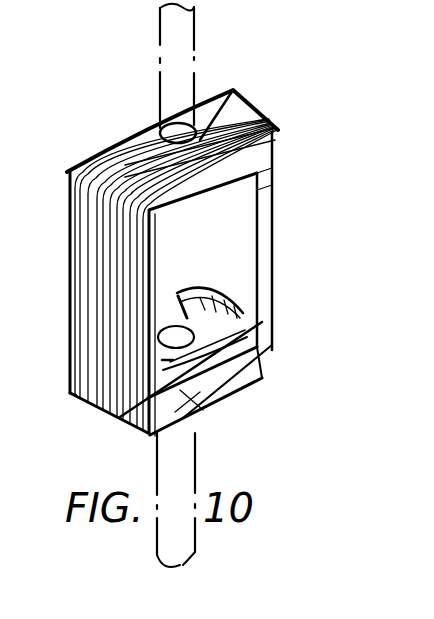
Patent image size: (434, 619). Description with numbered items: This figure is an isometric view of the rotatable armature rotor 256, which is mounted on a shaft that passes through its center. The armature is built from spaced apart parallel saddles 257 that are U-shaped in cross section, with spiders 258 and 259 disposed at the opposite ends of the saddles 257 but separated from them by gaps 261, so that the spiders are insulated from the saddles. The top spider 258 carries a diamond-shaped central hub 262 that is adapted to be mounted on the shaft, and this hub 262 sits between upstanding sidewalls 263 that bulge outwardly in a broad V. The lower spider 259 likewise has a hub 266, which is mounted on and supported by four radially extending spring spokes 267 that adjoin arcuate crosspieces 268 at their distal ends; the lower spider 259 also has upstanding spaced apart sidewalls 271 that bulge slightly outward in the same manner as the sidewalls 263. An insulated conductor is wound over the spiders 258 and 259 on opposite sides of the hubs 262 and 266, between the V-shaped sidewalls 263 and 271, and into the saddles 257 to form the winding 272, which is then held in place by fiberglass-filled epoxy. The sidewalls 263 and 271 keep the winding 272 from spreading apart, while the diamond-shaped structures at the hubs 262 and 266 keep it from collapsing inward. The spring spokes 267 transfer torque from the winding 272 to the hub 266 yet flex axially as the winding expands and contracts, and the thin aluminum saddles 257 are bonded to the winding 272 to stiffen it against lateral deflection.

The armature rotor 256 is at (115, 110).
The saddles 257 is at (73, 330).
The top spider 258 is at (205, 72).
The lower spider 259 is at (267, 333).
The gaps 261 is at (274, 167).
The diamond-shaped central hub 262 is at (143, 150).
The upstanding sidewalls 263 is at (264, 147).
The hub 266 is at (228, 387).
The spring spokes 267 is at (210, 405).
The arcuate crosspieces 268 is at (254, 360).
The upstanding spaced apart sidewalls 271 is at (183, 403).
The winding 272 is at (93, 403).